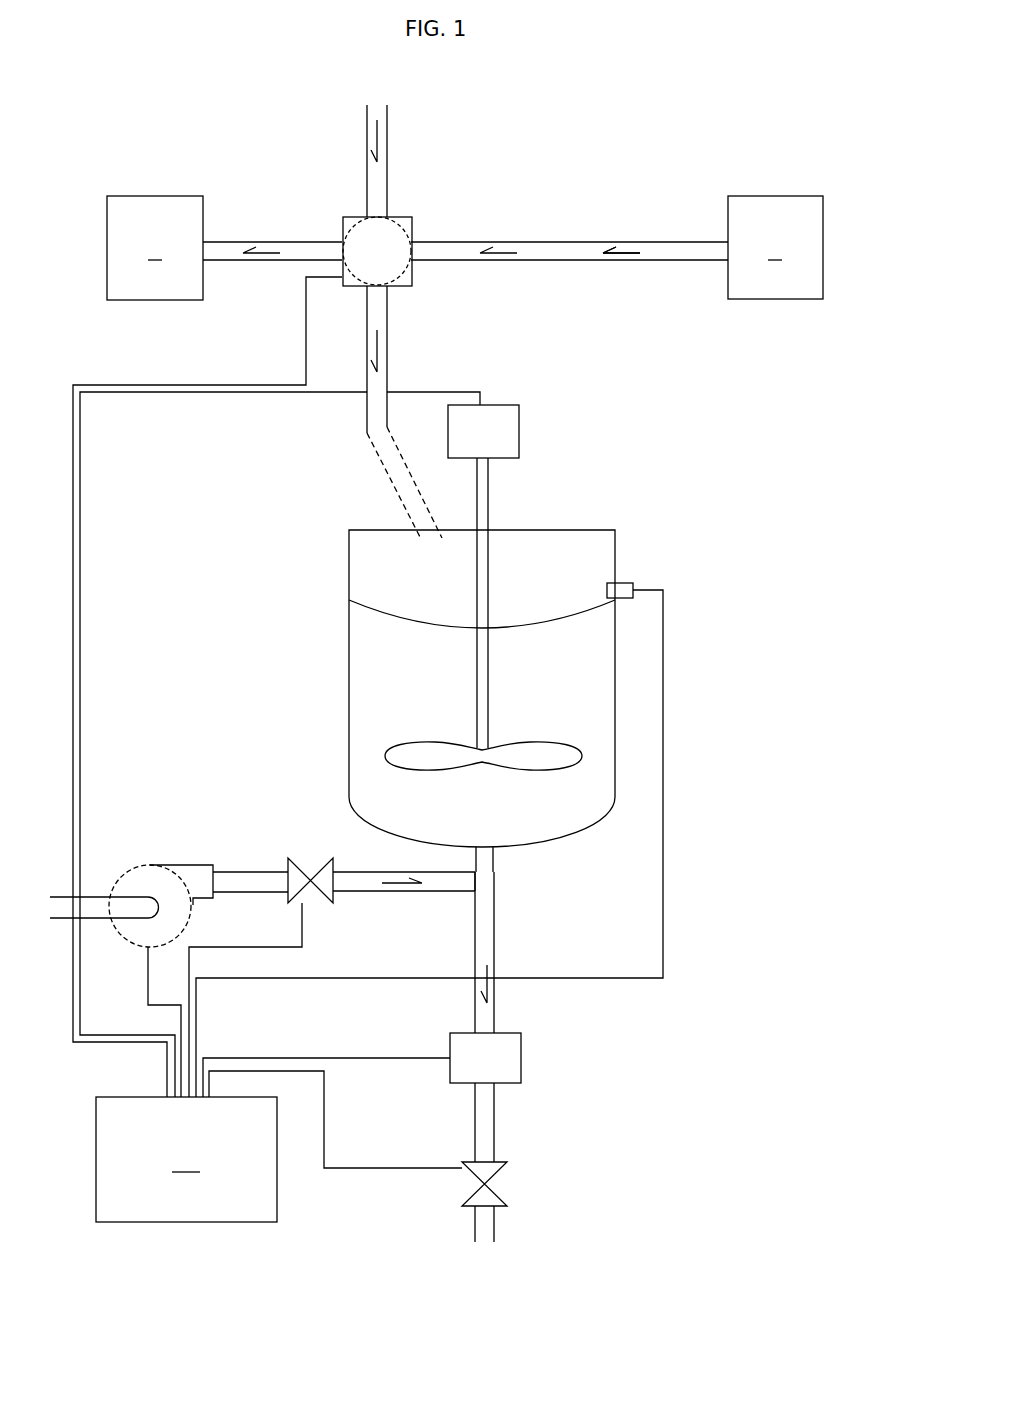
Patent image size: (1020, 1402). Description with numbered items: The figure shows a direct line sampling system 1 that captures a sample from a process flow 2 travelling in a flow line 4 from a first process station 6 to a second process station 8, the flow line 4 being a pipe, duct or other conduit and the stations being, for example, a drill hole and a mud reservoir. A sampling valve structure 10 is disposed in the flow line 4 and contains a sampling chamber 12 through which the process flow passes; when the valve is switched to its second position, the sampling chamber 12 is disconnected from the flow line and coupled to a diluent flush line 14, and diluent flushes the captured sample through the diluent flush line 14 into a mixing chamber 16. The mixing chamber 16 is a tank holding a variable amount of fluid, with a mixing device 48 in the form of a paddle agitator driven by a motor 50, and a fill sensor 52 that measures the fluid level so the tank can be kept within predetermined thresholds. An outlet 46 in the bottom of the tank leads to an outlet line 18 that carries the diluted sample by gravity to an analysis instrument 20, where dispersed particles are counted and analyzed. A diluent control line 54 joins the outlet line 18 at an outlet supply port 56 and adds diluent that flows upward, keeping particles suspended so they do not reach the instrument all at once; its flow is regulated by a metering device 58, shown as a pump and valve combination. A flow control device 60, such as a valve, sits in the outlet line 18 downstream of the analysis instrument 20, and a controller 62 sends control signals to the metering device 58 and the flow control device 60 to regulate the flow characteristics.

The direct line sampling system 1 is at (698, 137).
The process flow 2 is at (620, 253).
The flow line 4 is at (550, 242).
The first process station 6 is at (775, 247).
The second process station 8 is at (155, 248).
The sampling valve structure 10 is at (398, 215).
The sampling chamber 12 is at (363, 248).
The diluent flush line 14 is at (388, 133).
The mixing chamber 16 is at (563, 543).
The outlet line 18 is at (495, 918).
The analysis instrument 20 is at (521, 1057).
The outlet 46 is at (484, 845).
The mixing device 48 is at (538, 757).
The motor 50 is at (505, 435).
The fill sensor 52 is at (627, 583).
The diluent control line 54 is at (358, 891).
The outlet supply port 56 is at (477, 882).
The metering device 58 is at (160, 863).
The flow control device 60 is at (496, 1173).
The controller 62 is at (186, 1159).